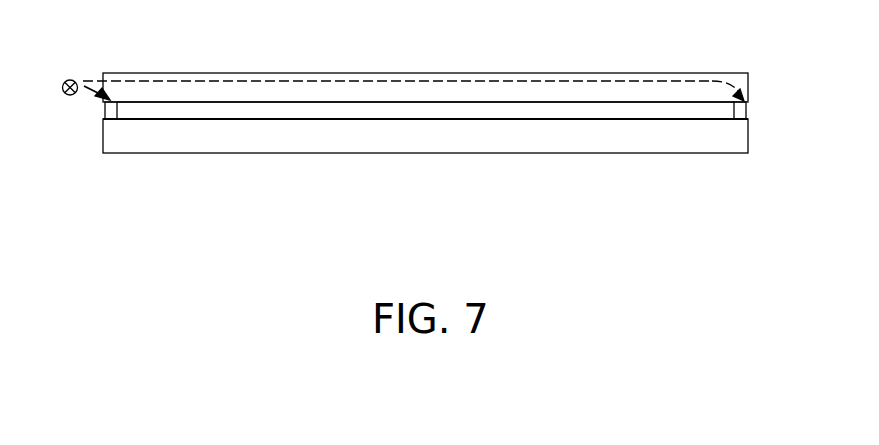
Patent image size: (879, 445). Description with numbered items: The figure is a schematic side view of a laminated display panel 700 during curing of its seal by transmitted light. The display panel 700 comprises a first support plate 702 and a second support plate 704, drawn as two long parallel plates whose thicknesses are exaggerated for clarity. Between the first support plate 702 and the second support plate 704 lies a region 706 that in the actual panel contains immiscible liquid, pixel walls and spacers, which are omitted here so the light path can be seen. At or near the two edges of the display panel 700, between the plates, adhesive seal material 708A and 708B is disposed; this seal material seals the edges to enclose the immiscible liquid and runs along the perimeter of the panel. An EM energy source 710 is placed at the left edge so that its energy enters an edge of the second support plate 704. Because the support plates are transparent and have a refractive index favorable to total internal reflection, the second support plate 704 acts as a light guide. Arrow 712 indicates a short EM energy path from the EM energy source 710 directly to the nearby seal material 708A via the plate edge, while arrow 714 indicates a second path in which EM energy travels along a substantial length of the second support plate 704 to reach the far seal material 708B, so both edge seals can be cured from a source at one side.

The laminated display panel 700 is at (567, 48).
The first support plate 702 is at (416, 148).
The second support plate 704 is at (418, 73).
The region 706 is at (542, 119).
The adhesive seal material 708A is at (117, 113).
The adhesive seal material 708B is at (747, 114).
The EM energy source 710 is at (70, 79).
The arrow 712 is at (88, 90).
The arrow 714 is at (658, 81).